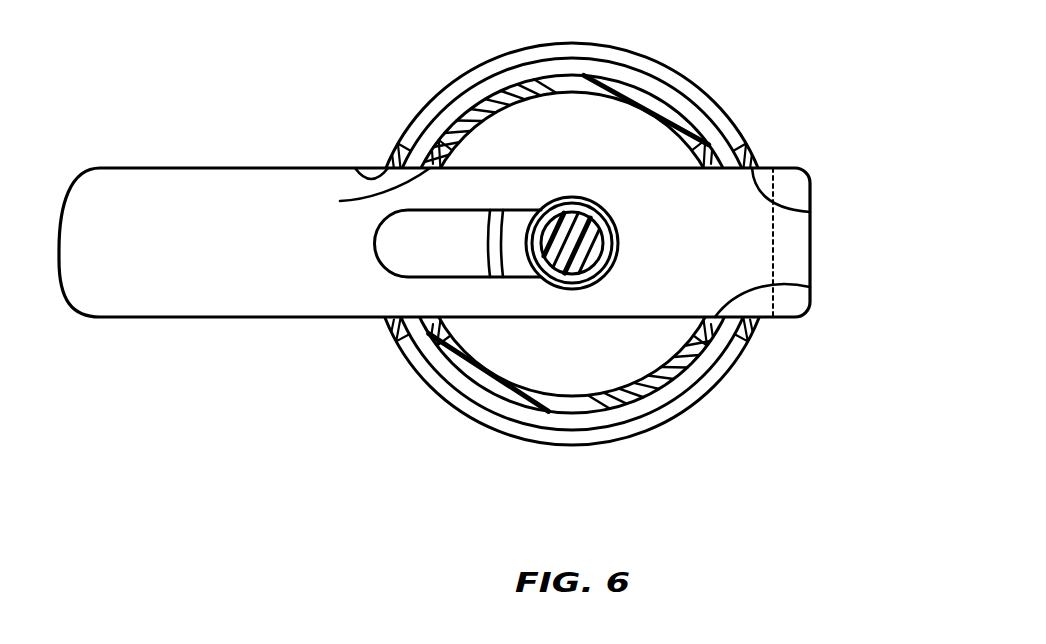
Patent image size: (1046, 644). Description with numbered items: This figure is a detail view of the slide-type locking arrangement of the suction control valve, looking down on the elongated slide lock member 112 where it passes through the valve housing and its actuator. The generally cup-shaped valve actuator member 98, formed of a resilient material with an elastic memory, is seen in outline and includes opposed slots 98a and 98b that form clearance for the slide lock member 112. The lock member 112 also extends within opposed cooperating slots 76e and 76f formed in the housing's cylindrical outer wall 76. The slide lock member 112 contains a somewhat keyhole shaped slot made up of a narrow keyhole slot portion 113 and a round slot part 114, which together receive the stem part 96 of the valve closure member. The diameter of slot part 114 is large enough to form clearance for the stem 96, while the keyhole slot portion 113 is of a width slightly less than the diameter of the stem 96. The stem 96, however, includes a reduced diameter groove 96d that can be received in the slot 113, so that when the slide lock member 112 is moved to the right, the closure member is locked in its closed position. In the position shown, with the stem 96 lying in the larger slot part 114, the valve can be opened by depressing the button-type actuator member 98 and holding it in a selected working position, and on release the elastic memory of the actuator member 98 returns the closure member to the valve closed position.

The cylindrical outer wall 76 is at (703, 85).
The slot 76e is at (358, 168).
The slot 76f is at (810, 213).
The stem part 96 is at (553, 280).
The reduced diameter groove 96d is at (570, 282).
The valve actuator member 98 is at (490, 88).
The slot 98a is at (340, 201).
The slot 98b is at (800, 287).
The slide lock member 112 is at (357, 320).
The keyhole slot portion 113 is at (505, 243).
The slot part 114 is at (603, 288).